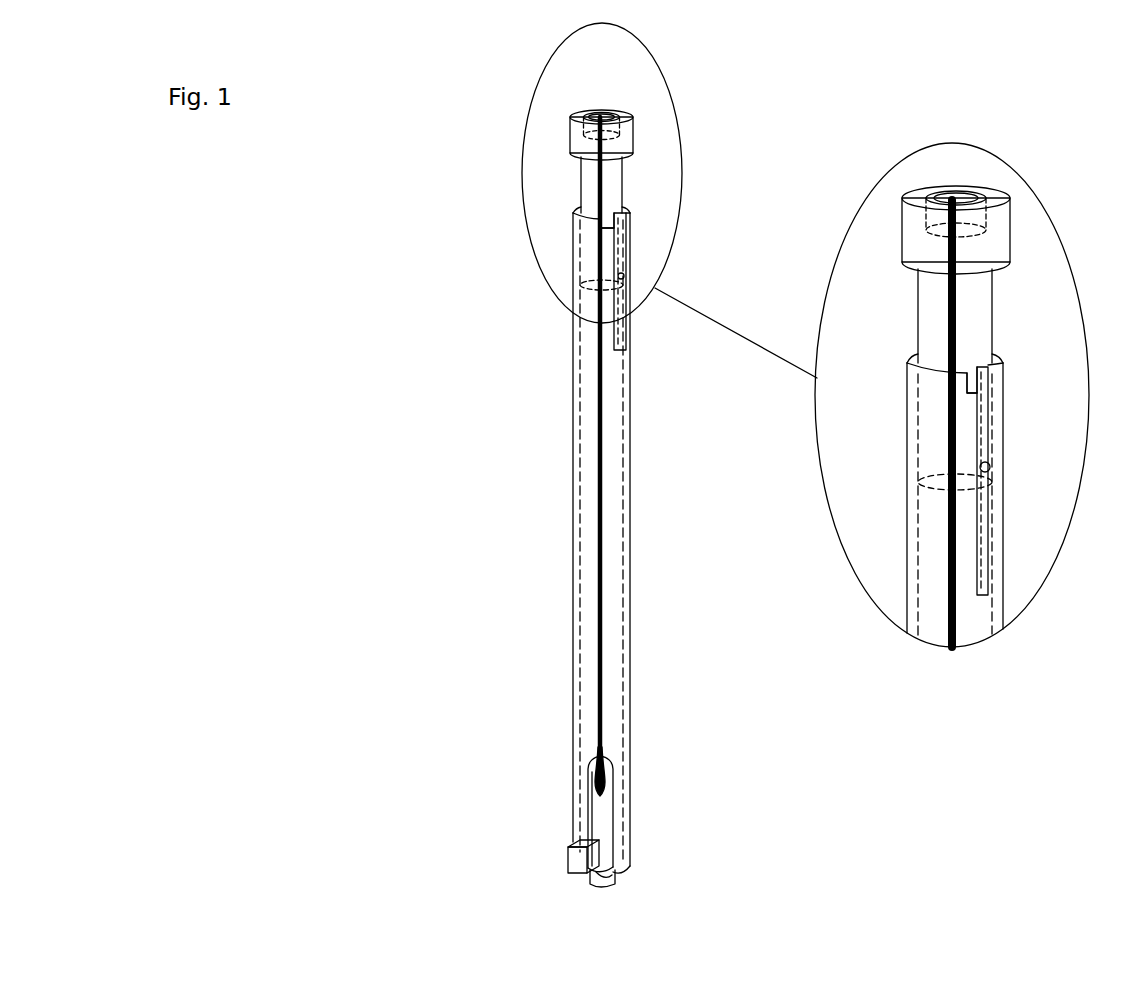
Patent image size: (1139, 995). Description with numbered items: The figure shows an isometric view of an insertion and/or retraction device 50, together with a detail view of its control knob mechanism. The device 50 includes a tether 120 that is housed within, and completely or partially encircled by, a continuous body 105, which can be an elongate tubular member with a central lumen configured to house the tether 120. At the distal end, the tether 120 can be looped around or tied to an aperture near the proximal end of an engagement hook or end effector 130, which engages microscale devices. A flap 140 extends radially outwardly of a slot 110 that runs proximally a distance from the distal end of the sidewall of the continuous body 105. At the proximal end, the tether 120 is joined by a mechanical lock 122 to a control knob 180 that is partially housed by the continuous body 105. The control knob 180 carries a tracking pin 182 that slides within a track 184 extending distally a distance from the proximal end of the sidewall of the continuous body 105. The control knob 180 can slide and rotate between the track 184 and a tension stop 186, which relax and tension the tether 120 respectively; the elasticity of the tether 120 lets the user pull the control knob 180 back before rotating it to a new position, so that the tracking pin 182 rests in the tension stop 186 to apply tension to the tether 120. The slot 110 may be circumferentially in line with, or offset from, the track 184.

The insertion device 50 is at (560, 370).
The continuous body 105 is at (573, 437).
The slot 110 is at (585, 803).
The tether 120 is at (605, 490).
The mechanical lock 122 is at (600, 115).
The engagement hook 130 is at (617, 877).
The flap 140 is at (562, 843).
The control knob 180 is at (650, 125).
The tracking pin 182 is at (620, 283).
The track 184 is at (620, 333).
The tension stop 186 is at (597, 223).